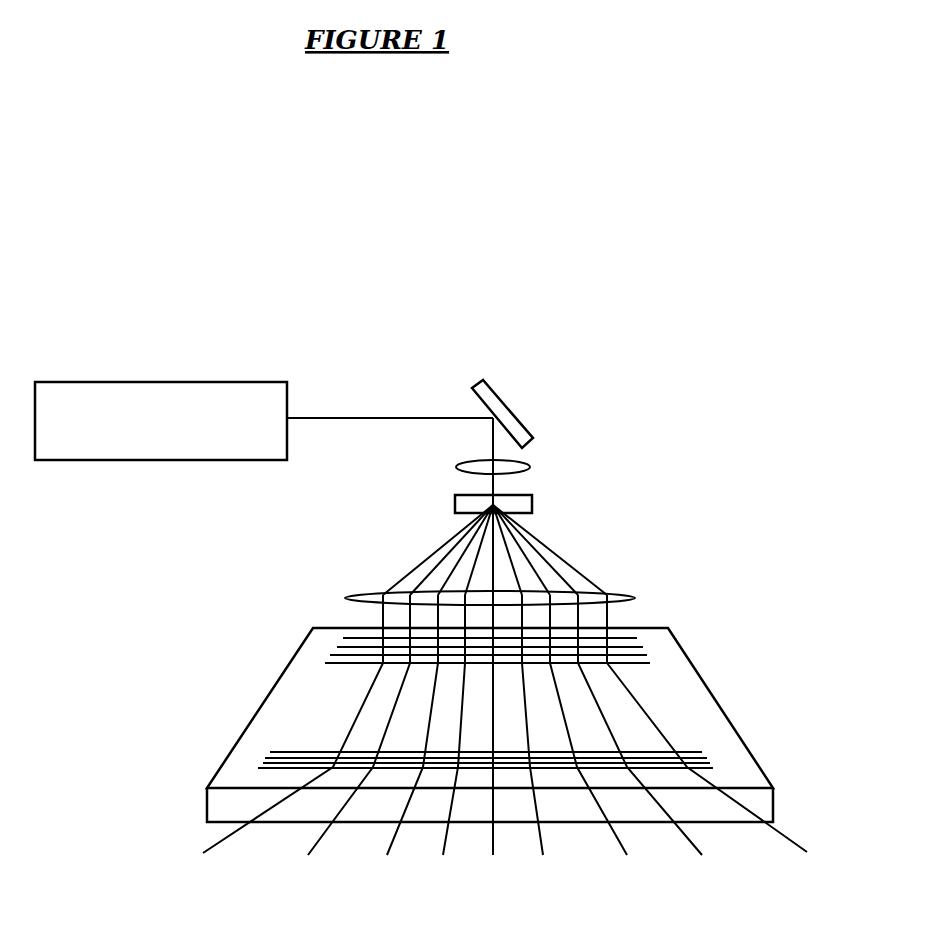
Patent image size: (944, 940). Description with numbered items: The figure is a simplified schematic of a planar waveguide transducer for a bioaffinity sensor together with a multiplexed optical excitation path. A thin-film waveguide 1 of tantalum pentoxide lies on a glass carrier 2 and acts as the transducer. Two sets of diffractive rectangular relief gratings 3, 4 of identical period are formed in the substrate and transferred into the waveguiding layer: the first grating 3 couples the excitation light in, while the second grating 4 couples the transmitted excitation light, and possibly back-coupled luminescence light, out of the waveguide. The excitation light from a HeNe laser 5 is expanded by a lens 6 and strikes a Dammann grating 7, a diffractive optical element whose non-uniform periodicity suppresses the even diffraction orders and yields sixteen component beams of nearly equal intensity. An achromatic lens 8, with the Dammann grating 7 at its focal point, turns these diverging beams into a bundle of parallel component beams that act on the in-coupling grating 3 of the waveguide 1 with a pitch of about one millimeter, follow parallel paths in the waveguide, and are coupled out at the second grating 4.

The thin-film waveguide 1 is at (703, 723).
The glass carrier 2 is at (763, 802).
The first grating 3 is at (635, 653).
The second grating 4 is at (268, 763).
The HeNe laser 5 is at (200, 397).
The lens 6 is at (515, 467).
The Dammann grating 7 is at (523, 507).
The achromatic lens 8 is at (613, 597).